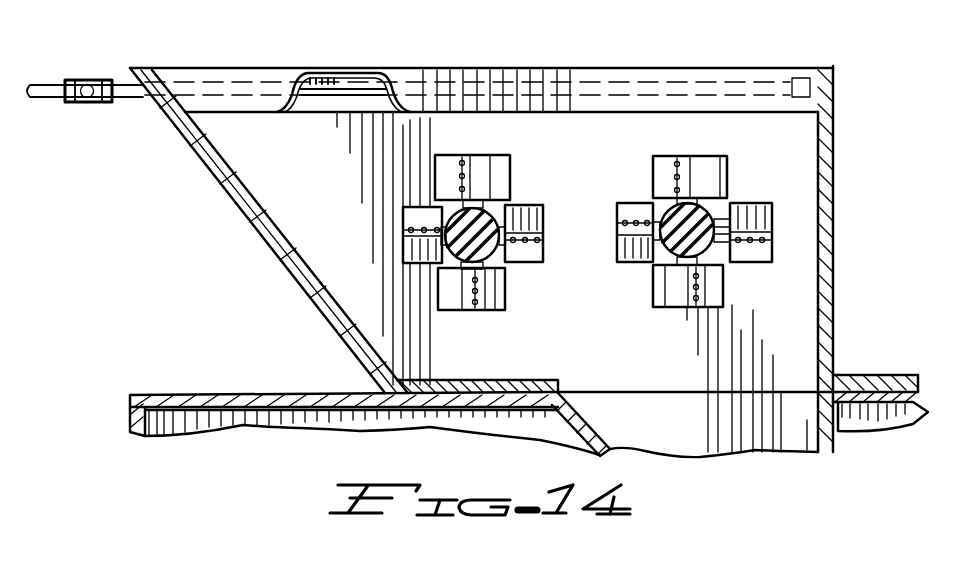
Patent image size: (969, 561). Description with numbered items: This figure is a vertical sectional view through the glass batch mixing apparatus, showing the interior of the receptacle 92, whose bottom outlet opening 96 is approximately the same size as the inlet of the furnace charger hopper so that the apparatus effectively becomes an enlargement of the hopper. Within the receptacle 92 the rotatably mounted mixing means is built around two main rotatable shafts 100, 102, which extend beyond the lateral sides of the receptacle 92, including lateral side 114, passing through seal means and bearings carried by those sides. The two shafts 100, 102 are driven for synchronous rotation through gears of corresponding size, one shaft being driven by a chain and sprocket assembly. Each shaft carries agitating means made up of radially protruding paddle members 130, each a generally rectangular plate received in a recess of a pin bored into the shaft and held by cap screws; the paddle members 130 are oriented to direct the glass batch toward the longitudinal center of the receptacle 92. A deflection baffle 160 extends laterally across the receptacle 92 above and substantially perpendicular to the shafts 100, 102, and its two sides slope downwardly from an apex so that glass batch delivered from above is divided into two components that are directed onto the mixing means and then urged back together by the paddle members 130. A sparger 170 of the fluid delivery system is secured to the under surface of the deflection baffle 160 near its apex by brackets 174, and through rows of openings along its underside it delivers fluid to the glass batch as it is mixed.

The receptacle 92 is at (835, 192).
The bottom outlet opening 96 is at (690, 378).
The rotatable shaft 100 is at (494, 205).
The rotatable shaft 102 is at (719, 206).
The lateral side 114 is at (332, 183).
The paddle member 130 is at (406, 207).
The deflection baffle 160 is at (599, 68).
The sparger 170 is at (342, 73).
The manifold 174 is at (97, 80).